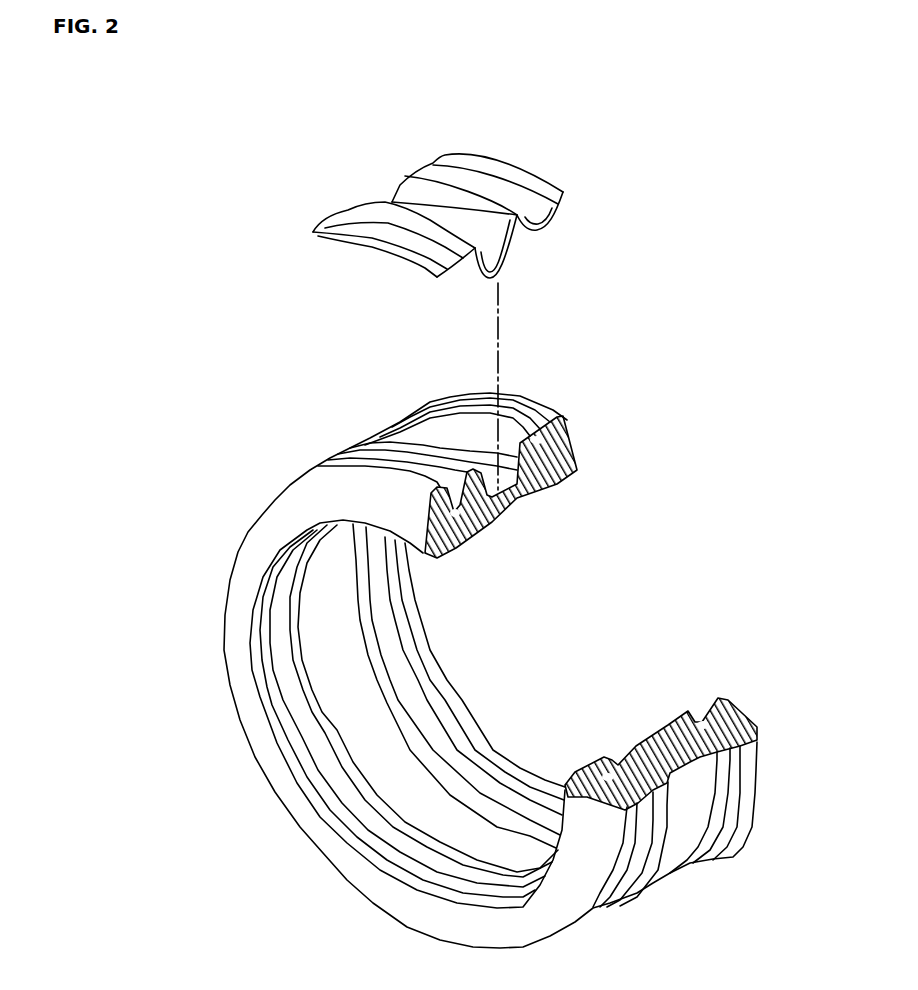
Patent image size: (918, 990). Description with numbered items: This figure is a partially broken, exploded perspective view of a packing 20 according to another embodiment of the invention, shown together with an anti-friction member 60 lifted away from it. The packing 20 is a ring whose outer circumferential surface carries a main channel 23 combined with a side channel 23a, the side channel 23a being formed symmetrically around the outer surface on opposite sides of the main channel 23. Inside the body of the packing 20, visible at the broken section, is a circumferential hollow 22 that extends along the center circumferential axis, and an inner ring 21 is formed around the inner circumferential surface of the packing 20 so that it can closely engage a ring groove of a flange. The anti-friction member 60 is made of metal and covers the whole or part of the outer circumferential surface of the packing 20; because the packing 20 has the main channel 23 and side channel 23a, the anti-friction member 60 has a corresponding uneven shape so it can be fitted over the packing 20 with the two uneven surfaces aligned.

The packing 20 is at (483, 670).
The inner ring 21 is at (440, 538).
The circumferential hollow 22 is at (477, 527).
The main channel 23 is at (662, 765).
The side channel 23a is at (720, 740).
The anti-friction member 60 is at (502, 160).